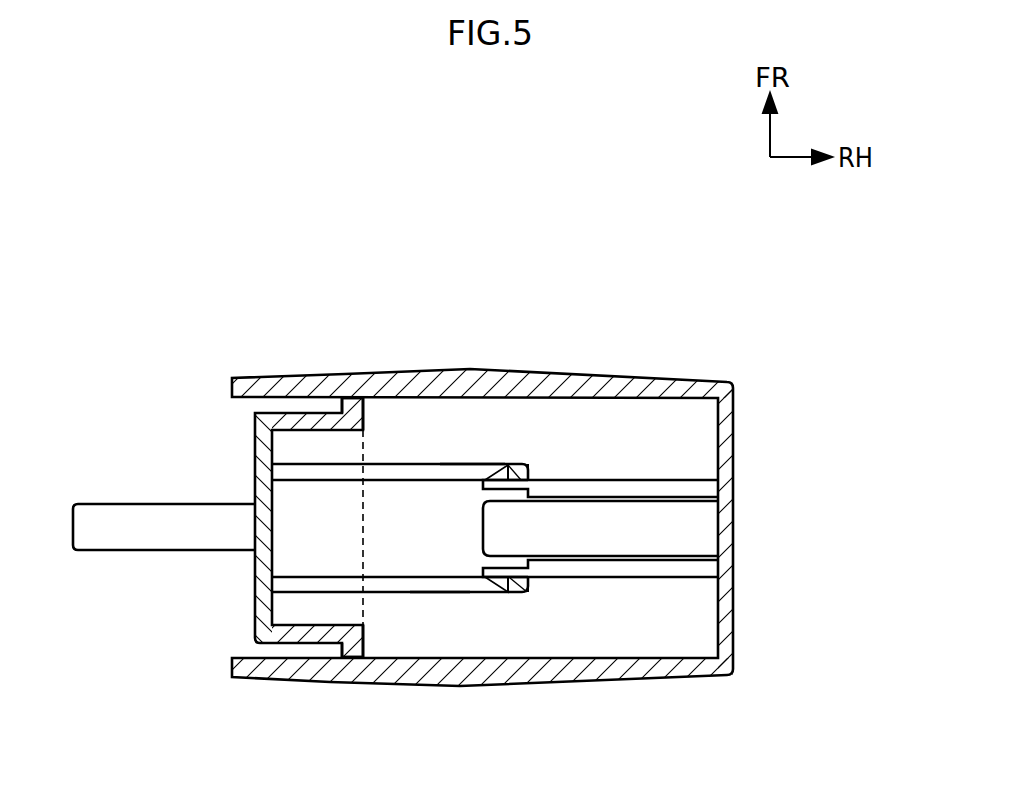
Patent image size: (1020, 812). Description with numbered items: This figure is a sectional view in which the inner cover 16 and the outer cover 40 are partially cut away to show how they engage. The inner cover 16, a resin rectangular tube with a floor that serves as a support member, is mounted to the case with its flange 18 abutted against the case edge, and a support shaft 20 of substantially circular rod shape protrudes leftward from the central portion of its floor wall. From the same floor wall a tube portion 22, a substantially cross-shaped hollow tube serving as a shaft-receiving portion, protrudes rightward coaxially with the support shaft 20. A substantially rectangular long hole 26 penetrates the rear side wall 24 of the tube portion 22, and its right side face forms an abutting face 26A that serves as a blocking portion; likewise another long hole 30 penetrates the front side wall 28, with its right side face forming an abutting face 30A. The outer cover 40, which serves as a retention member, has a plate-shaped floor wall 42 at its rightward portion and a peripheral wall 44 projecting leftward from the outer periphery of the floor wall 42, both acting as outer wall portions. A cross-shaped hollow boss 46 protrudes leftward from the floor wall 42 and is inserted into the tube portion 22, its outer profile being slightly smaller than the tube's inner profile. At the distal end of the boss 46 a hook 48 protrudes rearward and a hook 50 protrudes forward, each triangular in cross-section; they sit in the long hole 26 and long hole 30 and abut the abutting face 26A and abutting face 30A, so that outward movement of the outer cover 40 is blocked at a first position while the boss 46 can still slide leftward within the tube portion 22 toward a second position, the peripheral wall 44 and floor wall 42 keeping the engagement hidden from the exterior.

The inner cover 16 is at (256, 453).
The flange 18 is at (351, 376).
The support shaft 20 is at (118, 553).
The tube portion 22 is at (525, 593).
The rear side wall 24 is at (438, 593).
The long hole 26 is at (403, 583).
The abutting face 26A is at (493, 592).
The front side wall 28 is at (467, 462).
The long hole 30 is at (402, 468).
The abutting face 30A is at (508, 464).
The outer cover 40 is at (675, 379).
The floor wall 42 is at (734, 463).
The peripheral wall 44 is at (632, 683).
The boss 46 is at (645, 580).
The hook 48 is at (488, 582).
The hook 50 is at (497, 472).